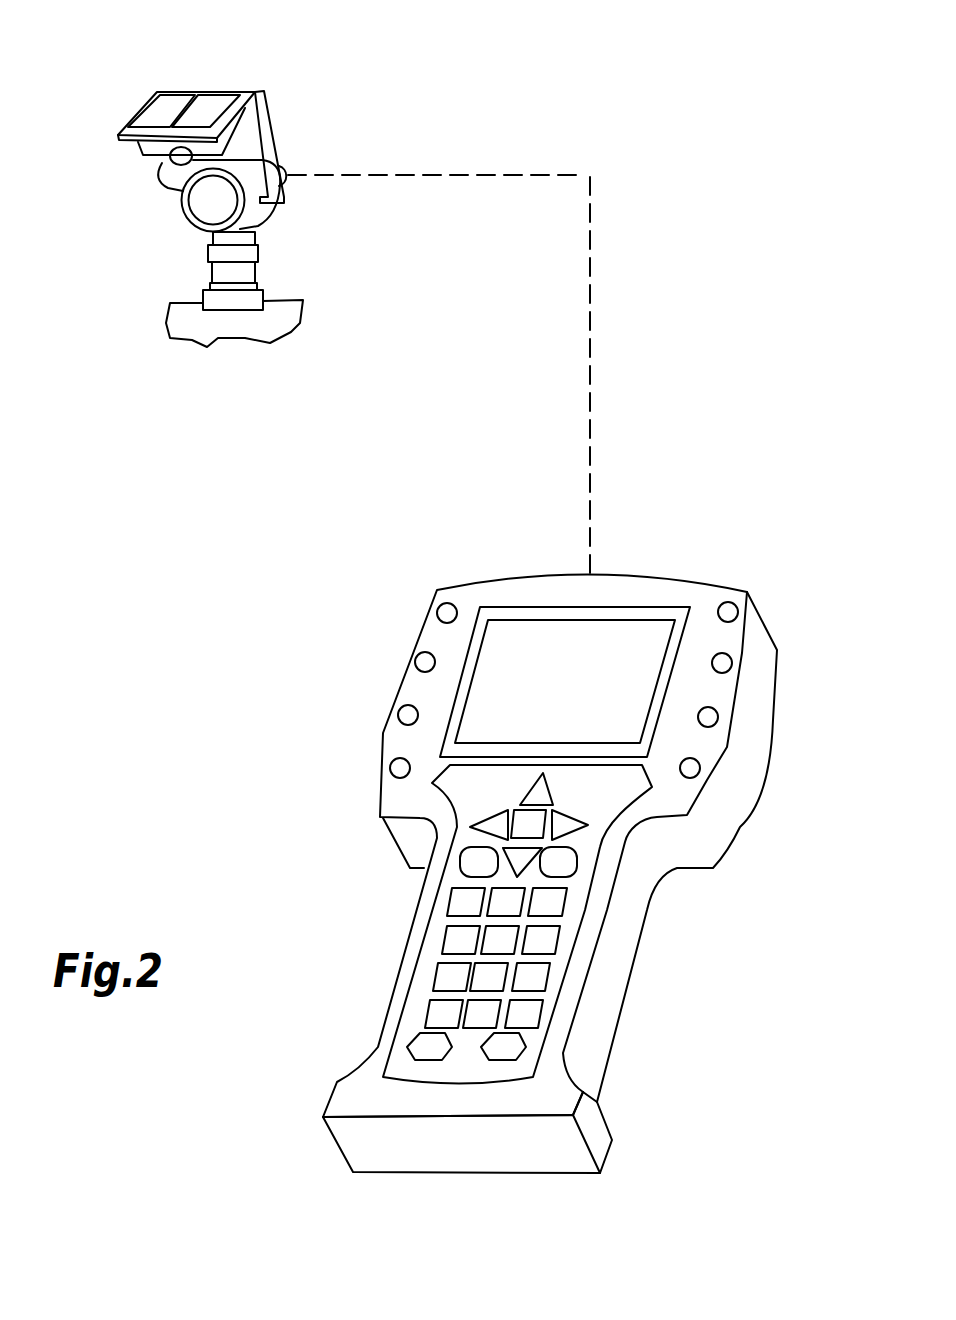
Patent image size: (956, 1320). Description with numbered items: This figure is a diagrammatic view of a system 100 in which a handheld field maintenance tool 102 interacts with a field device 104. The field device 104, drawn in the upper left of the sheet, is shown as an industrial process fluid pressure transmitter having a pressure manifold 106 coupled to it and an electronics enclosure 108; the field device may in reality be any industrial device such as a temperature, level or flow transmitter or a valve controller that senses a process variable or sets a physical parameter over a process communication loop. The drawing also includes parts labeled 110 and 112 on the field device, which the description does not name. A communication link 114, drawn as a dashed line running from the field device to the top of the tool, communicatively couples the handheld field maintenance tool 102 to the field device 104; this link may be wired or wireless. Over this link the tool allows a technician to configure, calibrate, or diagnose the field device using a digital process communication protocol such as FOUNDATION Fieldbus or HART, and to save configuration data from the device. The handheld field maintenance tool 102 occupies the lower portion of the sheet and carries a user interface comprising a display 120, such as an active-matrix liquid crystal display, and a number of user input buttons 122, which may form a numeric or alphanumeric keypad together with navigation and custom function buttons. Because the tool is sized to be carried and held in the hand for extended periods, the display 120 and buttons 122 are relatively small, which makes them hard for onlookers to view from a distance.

The system 100 is at (488, 833).
The handheld field maintenance tool 102 is at (740, 827).
The field device 104 is at (252, 303).
The pressure manifold 106 is at (198, 323).
The electronics enclosure 108 is at (258, 217).
The solar panel power module 110 is at (165, 148).
The support arm 112 is at (268, 112).
The communication link 114 is at (593, 373).
The display 120 is at (620, 612).
The user input buttons 122 is at (553, 930).